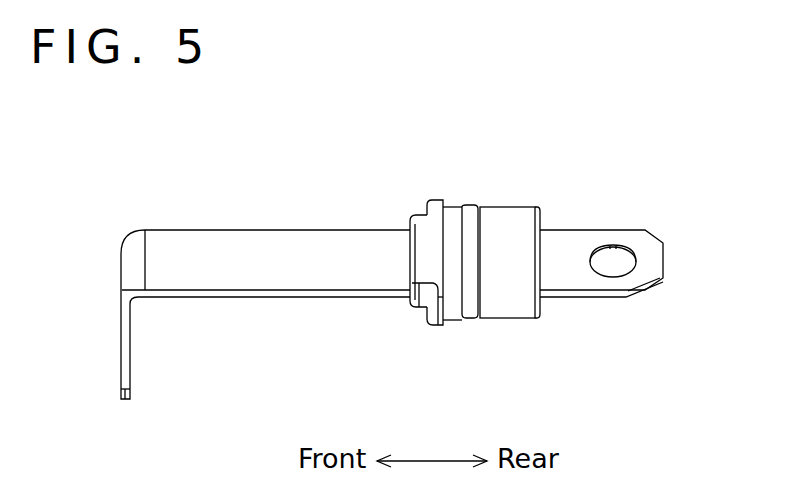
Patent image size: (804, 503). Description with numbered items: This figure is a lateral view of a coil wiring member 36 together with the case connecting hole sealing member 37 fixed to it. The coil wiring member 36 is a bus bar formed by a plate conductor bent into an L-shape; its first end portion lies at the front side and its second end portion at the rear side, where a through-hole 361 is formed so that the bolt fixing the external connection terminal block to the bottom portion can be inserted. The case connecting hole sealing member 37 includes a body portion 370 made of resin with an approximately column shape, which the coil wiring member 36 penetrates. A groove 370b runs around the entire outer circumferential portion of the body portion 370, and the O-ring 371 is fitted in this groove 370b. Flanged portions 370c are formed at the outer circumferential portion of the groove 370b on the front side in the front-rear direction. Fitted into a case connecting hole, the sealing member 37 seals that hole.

The coil wiring member 36 is at (275, 237).
The case connecting hole sealing member 37 is at (533, 207).
The through-hole 361 is at (637, 253).
The body portion 370 is at (505, 215).
The groove 370b is at (469, 308).
The flanged portions 370c is at (440, 203).
The O-ring 371 is at (473, 207).